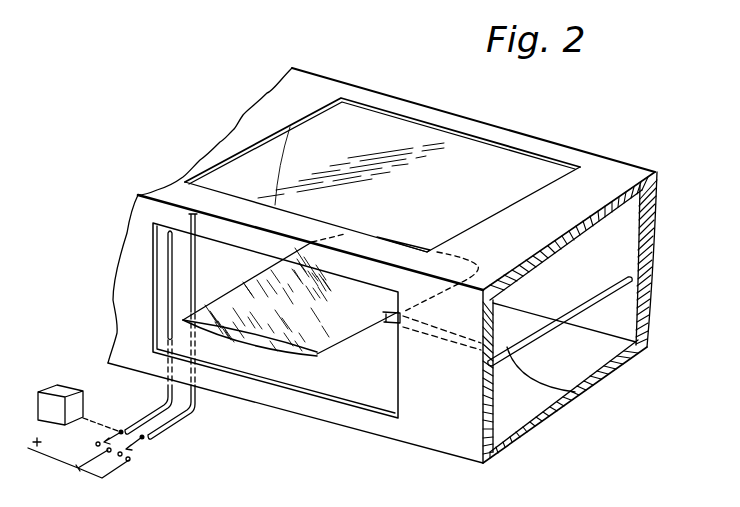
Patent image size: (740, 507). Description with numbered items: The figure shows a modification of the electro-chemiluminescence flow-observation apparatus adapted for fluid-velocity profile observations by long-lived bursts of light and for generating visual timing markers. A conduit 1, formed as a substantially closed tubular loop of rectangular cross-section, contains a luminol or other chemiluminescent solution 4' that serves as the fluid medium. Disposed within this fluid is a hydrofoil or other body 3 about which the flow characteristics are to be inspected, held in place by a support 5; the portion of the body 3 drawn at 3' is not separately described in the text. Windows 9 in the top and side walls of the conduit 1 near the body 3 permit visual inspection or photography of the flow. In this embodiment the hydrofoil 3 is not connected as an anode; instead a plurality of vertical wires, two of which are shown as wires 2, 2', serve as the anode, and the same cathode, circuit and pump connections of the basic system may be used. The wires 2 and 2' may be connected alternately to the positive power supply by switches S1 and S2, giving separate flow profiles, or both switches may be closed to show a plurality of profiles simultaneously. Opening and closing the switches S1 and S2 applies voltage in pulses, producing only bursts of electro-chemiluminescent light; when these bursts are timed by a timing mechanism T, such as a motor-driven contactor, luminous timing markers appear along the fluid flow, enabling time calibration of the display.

The conduit 1 is at (598, 156).
The vertical wire 2 is at (130, 333).
The vertical wire 2' is at (149, 309).
The hydrofoil 3 is at (330, 337).
The plate holder / rod end 3' is at (432, 345).
The chemiluminescent solution 4' is at (596, 321).
The support 5 is at (574, 391).
The window 9 is at (493, 160).
The timing mechanism T is at (79, 408).
The switch S1 is at (78, 445).
The switch S2 is at (136, 451).